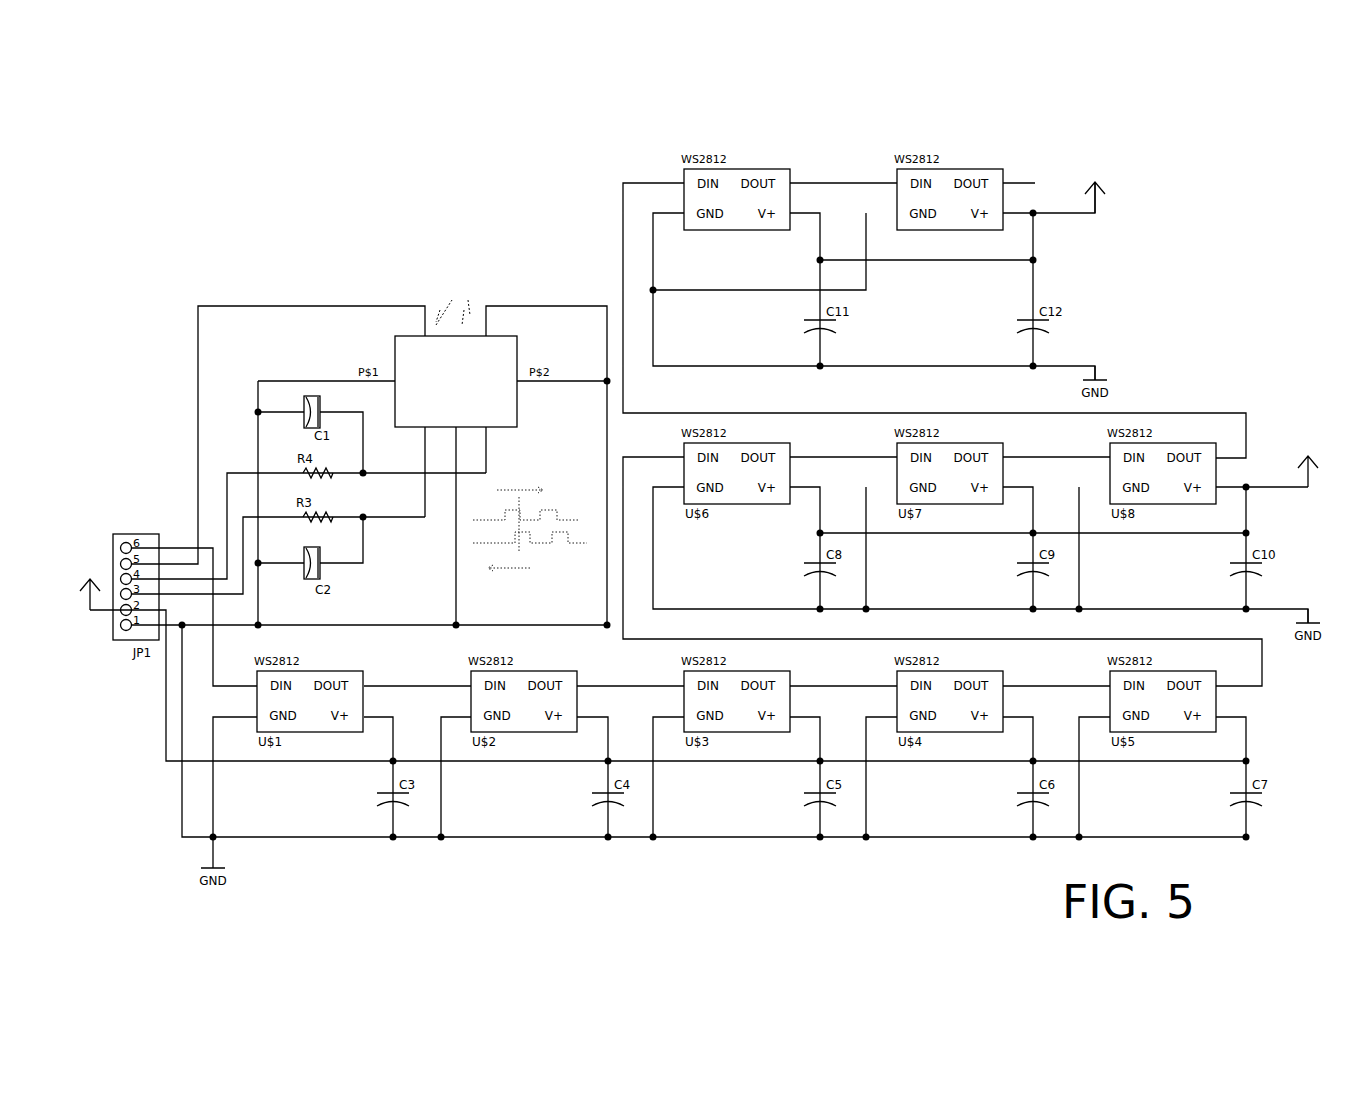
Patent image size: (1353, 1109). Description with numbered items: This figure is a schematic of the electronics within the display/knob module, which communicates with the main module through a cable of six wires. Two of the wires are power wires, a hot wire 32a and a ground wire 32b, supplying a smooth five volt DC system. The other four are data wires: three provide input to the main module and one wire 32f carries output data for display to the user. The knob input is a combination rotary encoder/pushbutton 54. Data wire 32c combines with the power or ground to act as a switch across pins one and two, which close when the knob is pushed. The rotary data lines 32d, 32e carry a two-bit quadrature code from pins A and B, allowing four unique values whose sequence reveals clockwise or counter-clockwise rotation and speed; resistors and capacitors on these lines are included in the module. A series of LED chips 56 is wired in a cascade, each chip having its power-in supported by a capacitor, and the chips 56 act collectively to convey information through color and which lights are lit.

The hot wire 32a is at (163, 703).
The ground wire 32b is at (313, 623).
The data wire 32c is at (198, 383).
The rotary data line 32d is at (380, 520).
The rotary data line 32e is at (245, 472).
The data wire 32f is at (179, 543).
The combination rotary encoder/pushbutton 54 is at (502, 350).
The LED chips 56 is at (732, 182).